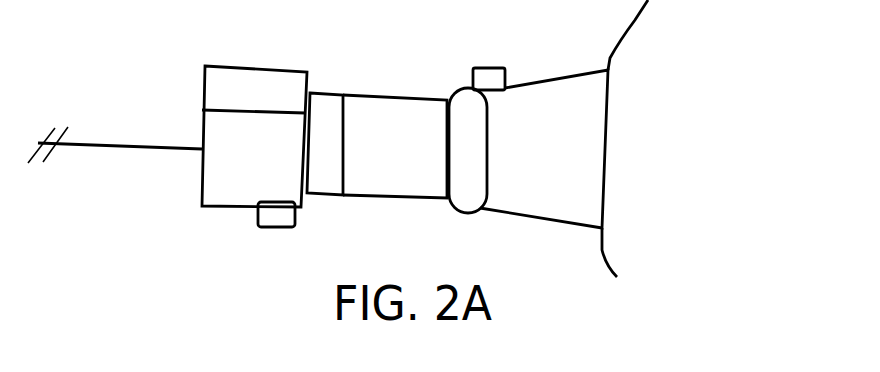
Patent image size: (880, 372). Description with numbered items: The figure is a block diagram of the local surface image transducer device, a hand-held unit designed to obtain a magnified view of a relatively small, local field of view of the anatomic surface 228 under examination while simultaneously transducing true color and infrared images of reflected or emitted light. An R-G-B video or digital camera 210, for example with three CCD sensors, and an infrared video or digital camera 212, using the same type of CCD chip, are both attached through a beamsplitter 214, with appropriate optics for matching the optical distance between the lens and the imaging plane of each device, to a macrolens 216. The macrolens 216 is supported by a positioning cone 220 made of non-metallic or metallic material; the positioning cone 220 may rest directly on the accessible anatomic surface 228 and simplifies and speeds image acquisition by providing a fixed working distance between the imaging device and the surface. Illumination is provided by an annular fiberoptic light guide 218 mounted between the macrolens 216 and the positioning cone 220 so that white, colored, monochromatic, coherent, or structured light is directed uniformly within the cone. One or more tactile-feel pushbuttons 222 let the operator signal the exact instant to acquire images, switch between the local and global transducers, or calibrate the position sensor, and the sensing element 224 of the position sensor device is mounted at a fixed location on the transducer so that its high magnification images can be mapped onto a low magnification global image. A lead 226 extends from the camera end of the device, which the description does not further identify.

The R-G-B video or digital camera 210 is at (202, 172).
The infrared video or digital camera 212 is at (208, 86).
The beamsplitter 214 is at (330, 92).
The macrolens 216 is at (400, 98).
The annular fiberoptic light guide 218 is at (460, 87).
The positioning cone 220 is at (553, 85).
The tactile-feel pushbuttons 222 is at (493, 72).
The sensing element 224 is at (273, 230).
The cable 226 is at (100, 150).
The anatomic surface 228 is at (598, 242).